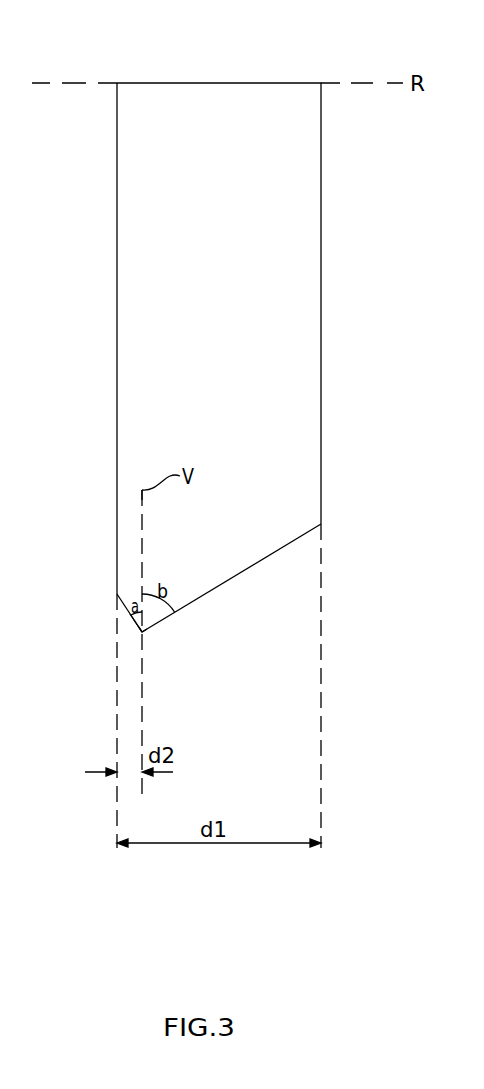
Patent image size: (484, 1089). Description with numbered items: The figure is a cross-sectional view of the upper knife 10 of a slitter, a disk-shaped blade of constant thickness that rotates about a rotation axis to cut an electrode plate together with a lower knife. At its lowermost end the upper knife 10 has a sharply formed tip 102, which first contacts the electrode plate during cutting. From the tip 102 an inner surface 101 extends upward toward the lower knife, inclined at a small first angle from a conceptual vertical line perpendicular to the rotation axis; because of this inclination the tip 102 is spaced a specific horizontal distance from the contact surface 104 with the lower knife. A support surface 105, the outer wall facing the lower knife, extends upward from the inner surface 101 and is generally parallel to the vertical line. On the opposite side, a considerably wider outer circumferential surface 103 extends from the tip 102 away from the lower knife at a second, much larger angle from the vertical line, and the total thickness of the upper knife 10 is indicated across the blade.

The upper knife 10 is at (218, 98).
The inner surface 101 is at (135, 623).
The tip 102 is at (142, 635).
The outer circumferential surface 103 is at (230, 580).
The contact surface 104 is at (117, 594).
The support surface 105 is at (117, 267).